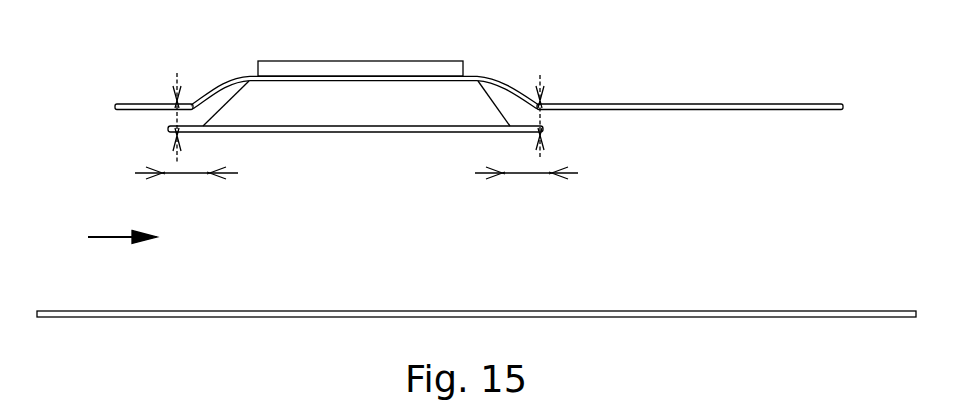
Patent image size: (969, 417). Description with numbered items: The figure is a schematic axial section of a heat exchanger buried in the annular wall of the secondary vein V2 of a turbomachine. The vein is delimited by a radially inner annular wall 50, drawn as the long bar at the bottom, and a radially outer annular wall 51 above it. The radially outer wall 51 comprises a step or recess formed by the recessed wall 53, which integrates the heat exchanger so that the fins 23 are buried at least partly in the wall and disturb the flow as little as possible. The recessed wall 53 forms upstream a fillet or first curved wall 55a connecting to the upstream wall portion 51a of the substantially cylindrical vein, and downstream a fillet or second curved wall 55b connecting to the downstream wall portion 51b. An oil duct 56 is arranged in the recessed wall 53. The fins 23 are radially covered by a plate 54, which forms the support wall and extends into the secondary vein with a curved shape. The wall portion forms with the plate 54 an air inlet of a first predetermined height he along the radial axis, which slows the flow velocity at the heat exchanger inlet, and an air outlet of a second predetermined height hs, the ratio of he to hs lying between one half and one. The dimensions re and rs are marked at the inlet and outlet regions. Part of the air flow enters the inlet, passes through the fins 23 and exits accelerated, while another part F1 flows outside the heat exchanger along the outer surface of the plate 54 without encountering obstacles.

The recessed wall 53 is at (498, 77).
The first curved wall 55a is at (228, 82).
The second curved wall 55b is at (513, 84).
The wall portion 51a is at (133, 102).
The wall portion 51b is at (613, 110).
The radially outer annular wall 51 is at (815, 110).
The oil duct 56 is at (383, 61).
The plate 54 is at (382, 133).
The fins 23 is at (356, 103).
The first predetermined height he is at (167, 118).
The second predetermined height hs is at (542, 117).
The entry radius/offset re is at (186, 181).
The exit radius/offset rs is at (526, 181).
The air flow part F1 is at (122, 226).
The secondary vein V2 is at (642, 233).
The radially inner annular wall 50 is at (845, 310).